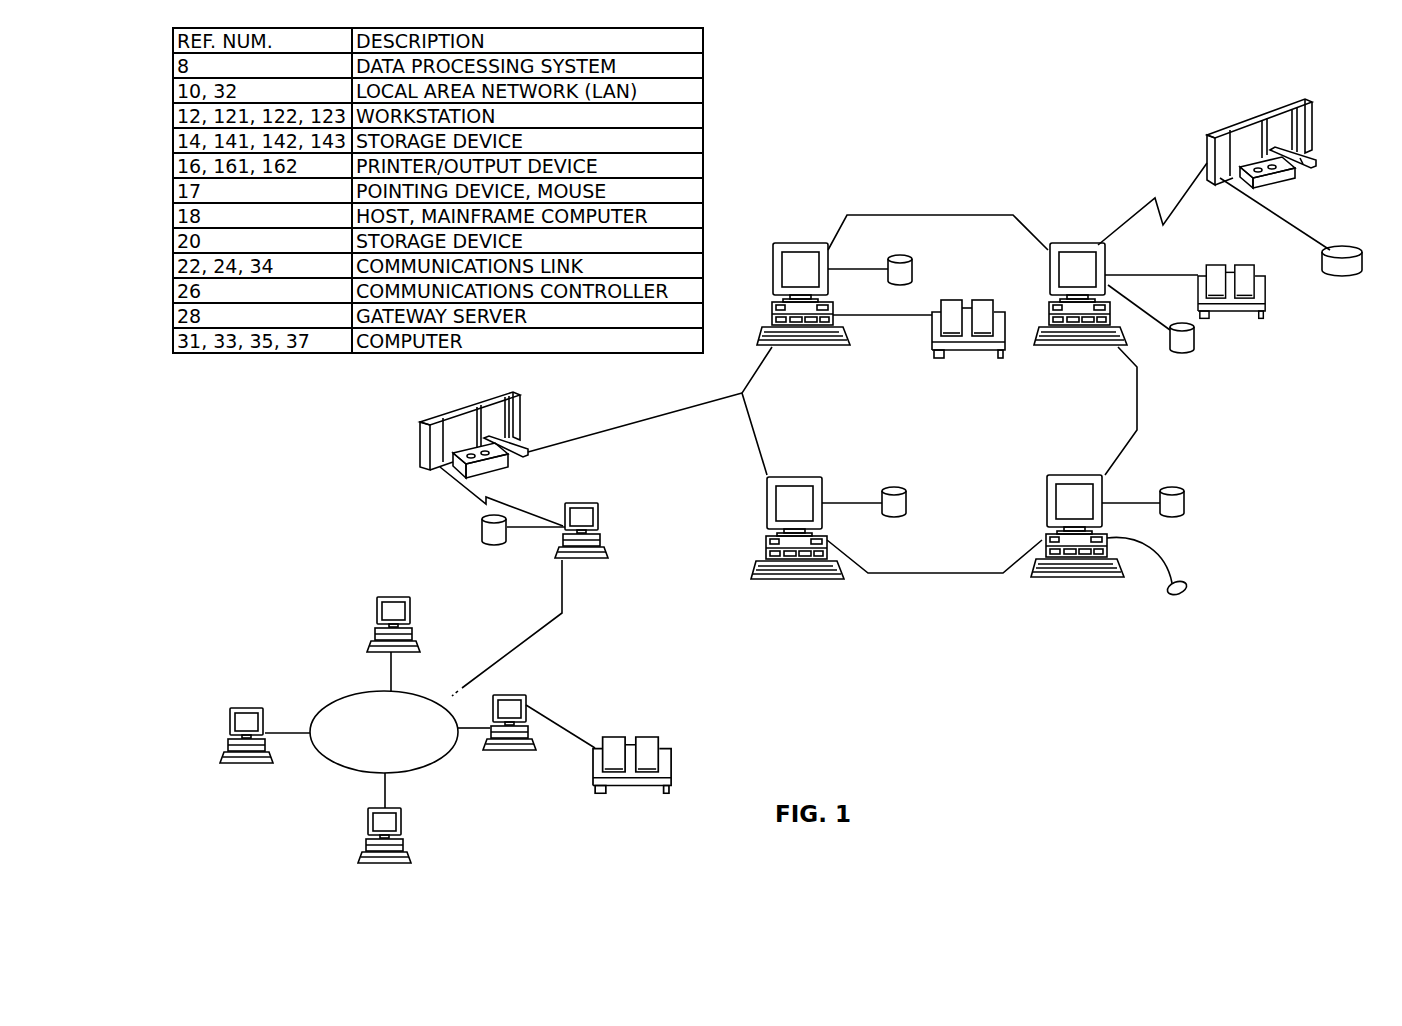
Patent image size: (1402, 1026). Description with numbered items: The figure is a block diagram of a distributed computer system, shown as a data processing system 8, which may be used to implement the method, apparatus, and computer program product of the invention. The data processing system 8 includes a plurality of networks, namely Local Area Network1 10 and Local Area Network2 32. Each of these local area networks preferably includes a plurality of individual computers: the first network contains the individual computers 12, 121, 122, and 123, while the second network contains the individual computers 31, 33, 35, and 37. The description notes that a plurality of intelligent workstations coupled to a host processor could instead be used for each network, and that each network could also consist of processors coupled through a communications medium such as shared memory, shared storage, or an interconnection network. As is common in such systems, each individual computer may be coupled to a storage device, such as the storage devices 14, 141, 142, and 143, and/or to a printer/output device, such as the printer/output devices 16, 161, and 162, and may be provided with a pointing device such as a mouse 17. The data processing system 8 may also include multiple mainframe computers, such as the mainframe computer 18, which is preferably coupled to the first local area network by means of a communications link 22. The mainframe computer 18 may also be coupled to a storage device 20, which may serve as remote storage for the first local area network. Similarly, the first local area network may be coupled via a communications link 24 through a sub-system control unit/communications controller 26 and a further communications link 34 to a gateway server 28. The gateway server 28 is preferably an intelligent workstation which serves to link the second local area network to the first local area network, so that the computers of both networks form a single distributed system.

The data processing system 8 is at (898, 215).
The Local Area Network1 10 is at (927, 576).
The Local Area Network2 32 is at (337, 767).
The individual computer 12 is at (1060, 475).
The individual computer 121 is at (1069, 245).
The individual computer 122 is at (790, 243).
The individual computer 123 is at (787, 476).
The storage device 14 is at (1187, 498).
The storage device 141 is at (1193, 343).
The storage device 142 is at (912, 270).
The storage device 143 is at (907, 498).
The printer/output device 16 is at (627, 738).
The printer/output device 161 is at (1232, 265).
The printer/output device 162 is at (972, 300).
The mouse 17 is at (1185, 588).
The mainframe computer 18 is at (1268, 120).
The storage device 20 is at (1350, 249).
The communications link 22 is at (1193, 181).
The communications link 24 is at (632, 421).
The communications link 34 is at (452, 480).
The sub-system control unit/communications controller 26 is at (518, 393).
The gateway server 28 is at (578, 503).
The individual computer 31 is at (387, 596).
The individual computer 33 is at (503, 697).
The individual computer 35 is at (370, 866).
The individual computer 37 is at (242, 708).